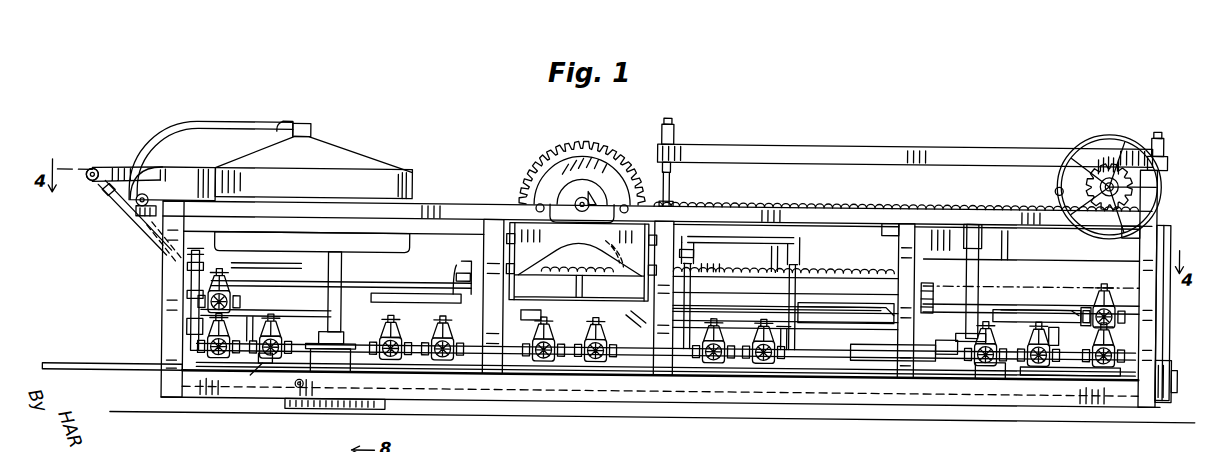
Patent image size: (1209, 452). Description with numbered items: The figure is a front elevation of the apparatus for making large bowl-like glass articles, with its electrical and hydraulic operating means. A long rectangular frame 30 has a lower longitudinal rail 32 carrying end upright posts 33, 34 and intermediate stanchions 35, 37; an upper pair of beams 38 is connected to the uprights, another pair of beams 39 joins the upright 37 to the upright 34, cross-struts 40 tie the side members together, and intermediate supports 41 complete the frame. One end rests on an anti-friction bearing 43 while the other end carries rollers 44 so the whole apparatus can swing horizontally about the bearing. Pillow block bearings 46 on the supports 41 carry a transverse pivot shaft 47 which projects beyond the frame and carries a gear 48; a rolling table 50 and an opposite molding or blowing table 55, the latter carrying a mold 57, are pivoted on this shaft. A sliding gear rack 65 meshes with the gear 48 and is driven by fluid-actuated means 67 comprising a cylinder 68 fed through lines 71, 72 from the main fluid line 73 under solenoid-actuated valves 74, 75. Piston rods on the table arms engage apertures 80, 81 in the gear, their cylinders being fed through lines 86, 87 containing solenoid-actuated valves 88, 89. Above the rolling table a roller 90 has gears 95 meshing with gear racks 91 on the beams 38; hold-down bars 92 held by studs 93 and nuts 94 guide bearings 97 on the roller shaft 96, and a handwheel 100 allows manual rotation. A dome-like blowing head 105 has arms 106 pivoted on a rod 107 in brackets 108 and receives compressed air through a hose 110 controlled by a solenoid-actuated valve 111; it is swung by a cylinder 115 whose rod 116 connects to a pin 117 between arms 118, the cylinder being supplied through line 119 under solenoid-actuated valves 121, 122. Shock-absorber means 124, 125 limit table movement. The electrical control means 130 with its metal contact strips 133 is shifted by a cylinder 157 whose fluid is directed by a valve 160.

The frame 30 is at (157, 353).
The lower longitudinal rail 32 is at (1074, 396).
The upright post 33 is at (1158, 325).
The upright post 34 is at (170, 306).
The intermediate stanchion 35 is at (896, 260).
The intermediate stanchion 37 is at (486, 215).
The longitudinal bars or beams 38 is at (978, 210).
The beams 39 is at (446, 207).
The cross-struts 40 is at (876, 228).
The intermediate supports 41 is at (579, 253).
The anti-friction bearing 43 is at (304, 410).
The rollers 44 is at (1168, 373).
The pillow block bearings 46 is at (590, 194).
The transverse pivot shaft 47 is at (577, 186).
The gear 48 is at (545, 166).
The rolling table 50 is at (660, 201).
The molding or blowing table 55 is at (581, 262).
The mold 57 is at (276, 256).
The gear rack 65 is at (808, 270).
The fluid-actuated means 67 is at (998, 268).
The cylinder 68 is at (1038, 276).
The pressure fluid line 71 is at (1103, 325).
The fluid line 72 is at (962, 282).
The main fluid line 73 is at (1046, 378).
The solenoid-actuated valve 74 is at (1058, 326).
The solenoid-actuated valve 75 is at (948, 340).
The aperture 80 is at (538, 198).
The aperture 81 is at (622, 198).
The fluid line 86 is at (458, 258).
The fluid line 87 is at (760, 245).
The solenoid-actuated valve 88 is at (378, 316).
The solenoid-actuated valve 89 is at (790, 333).
The roller 90 is at (1141, 186).
The gear racks 91 is at (832, 204).
The bars 92 is at (748, 147).
The bolts or studs 93 is at (672, 120).
The nuts 94 is at (660, 136).
The gears 95 is at (1054, 186).
The shaft 96 is at (1128, 172).
The bearings 97 is at (1082, 138).
The handwheel 100 is at (1107, 132).
The blowing head 105 is at (352, 156).
The arms 106 is at (178, 172).
The rod 107 is at (135, 205).
The brackets 108 is at (140, 225).
The hose 110 is at (212, 121).
The solenoid-actuated valve 111 is at (186, 287).
The cylinder 115 is at (265, 362).
The rod 116 is at (160, 240).
The pin 117 is at (88, 170).
The arms 118 is at (105, 166).
The pressure fluid line 119 is at (288, 312).
The solenoid-actuated valve 121 is at (338, 290).
The solenoid-actuated valve 122 is at (186, 324).
The shock-absorber means 124 is at (985, 378).
The shock-absorber means 125 is at (332, 362).
The electrical control means 130 is at (596, 309).
The metal contact strips 133 is at (760, 308).
The cylinder 157 is at (860, 314).
The valve 160 is at (1114, 262).